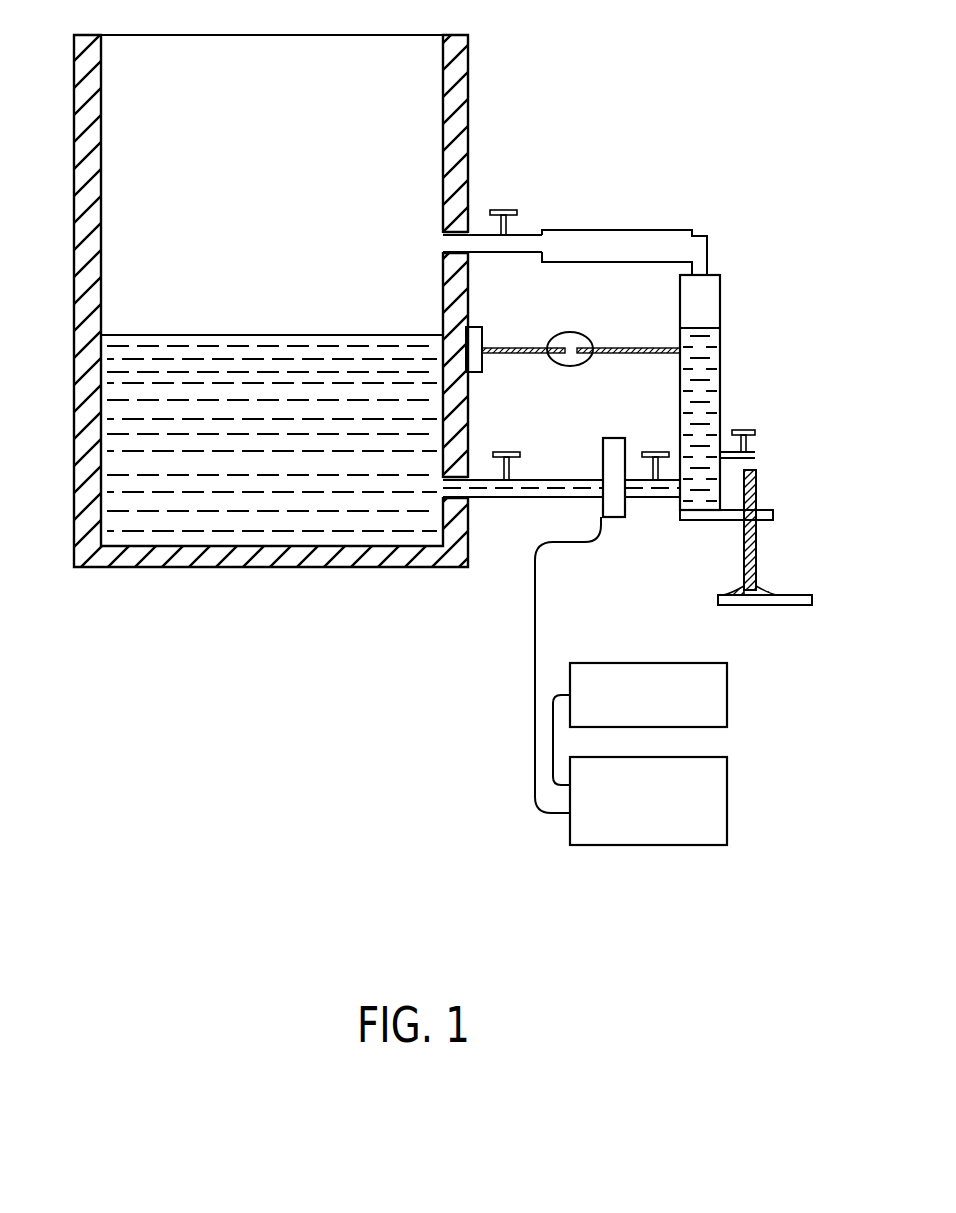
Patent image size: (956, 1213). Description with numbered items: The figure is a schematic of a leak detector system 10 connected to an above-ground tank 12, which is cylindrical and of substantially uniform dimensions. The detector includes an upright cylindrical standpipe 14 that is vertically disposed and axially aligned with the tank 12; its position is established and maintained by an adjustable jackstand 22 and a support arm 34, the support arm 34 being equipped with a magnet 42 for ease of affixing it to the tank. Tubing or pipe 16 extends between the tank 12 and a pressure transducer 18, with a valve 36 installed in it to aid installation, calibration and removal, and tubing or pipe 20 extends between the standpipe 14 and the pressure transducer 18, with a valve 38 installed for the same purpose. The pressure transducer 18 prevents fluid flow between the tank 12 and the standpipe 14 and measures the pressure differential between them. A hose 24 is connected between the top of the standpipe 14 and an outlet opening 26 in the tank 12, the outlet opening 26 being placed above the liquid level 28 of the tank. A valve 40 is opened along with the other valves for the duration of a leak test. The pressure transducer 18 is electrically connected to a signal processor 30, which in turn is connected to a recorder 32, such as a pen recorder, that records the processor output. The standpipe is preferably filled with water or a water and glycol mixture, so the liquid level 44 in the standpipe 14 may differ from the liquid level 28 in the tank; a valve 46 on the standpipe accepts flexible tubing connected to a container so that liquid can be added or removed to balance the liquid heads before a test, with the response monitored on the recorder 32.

The leak detector system 10 is at (738, 318).
The above-ground tank 12 is at (73, 163).
The standpipe 14 is at (722, 372).
The tubing or pipe 16 is at (540, 498).
The pressure transducer 18 is at (610, 437).
The tubing or pipe 20 is at (652, 500).
The adjustable jackstand 22 is at (758, 553).
The hose 24 is at (614, 230).
The outlet opening 26 is at (443, 246).
The liquid level 28 is at (296, 333).
The signal processor 30 is at (727, 812).
The recorder 32 is at (727, 687).
The support arm 34 is at (512, 346).
The valve 36 is at (512, 455).
The valve 38 is at (648, 455).
The valve 40 is at (503, 210).
The magnet 42 is at (482, 365).
The liquid level in standpipe 44 is at (692, 327).
The valve 46 is at (745, 428).